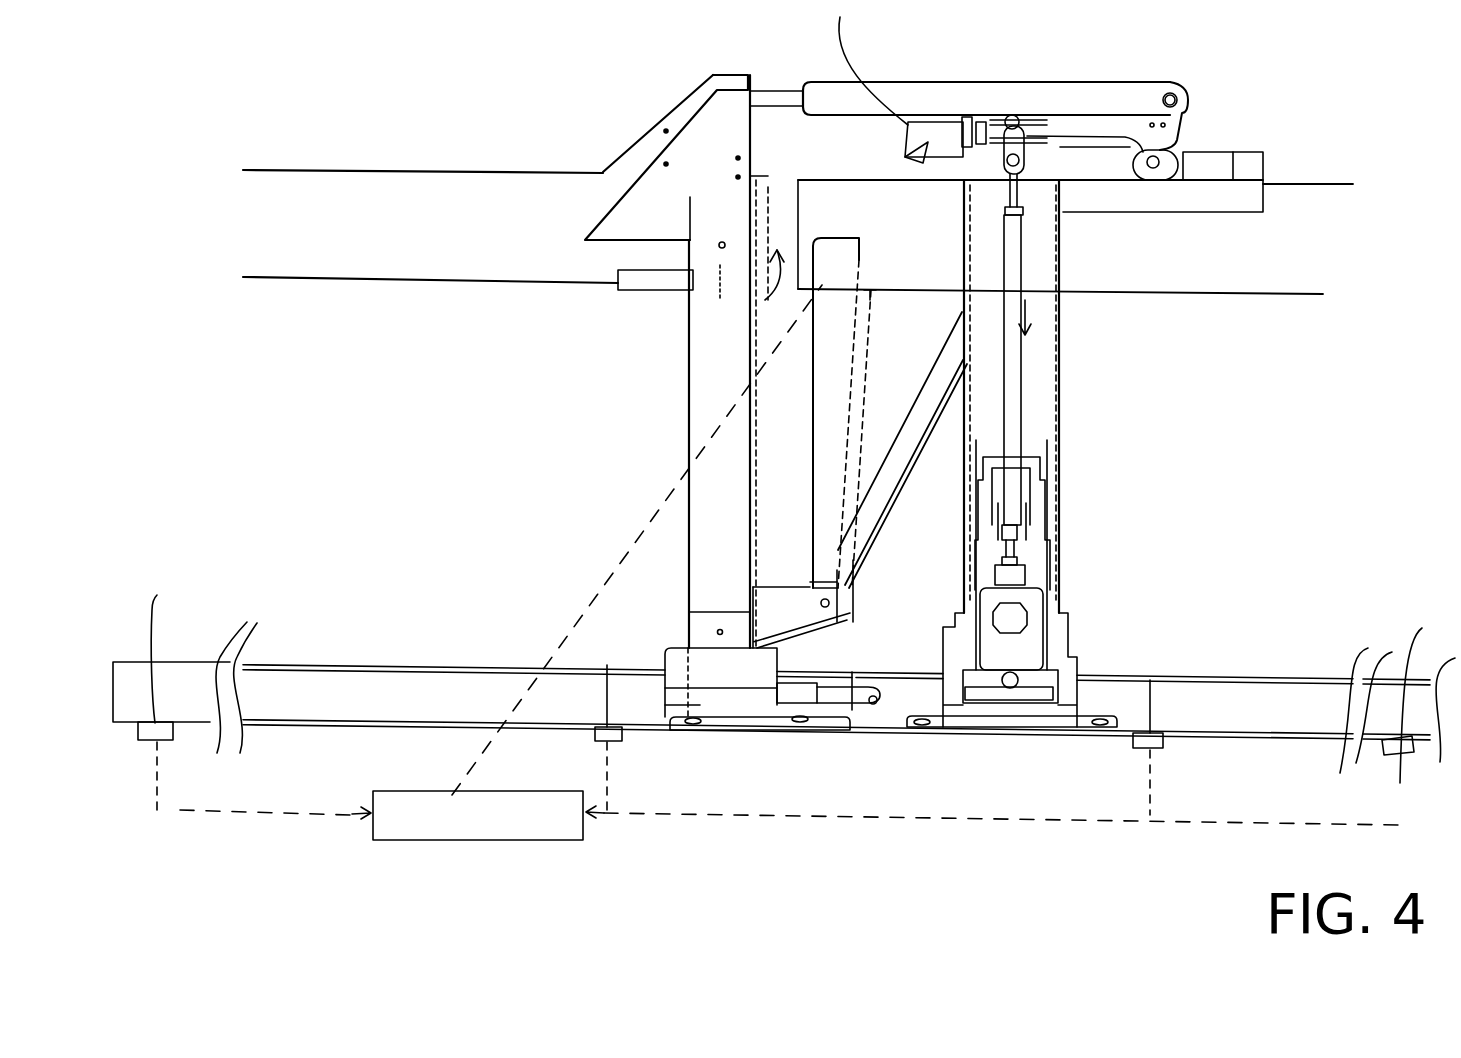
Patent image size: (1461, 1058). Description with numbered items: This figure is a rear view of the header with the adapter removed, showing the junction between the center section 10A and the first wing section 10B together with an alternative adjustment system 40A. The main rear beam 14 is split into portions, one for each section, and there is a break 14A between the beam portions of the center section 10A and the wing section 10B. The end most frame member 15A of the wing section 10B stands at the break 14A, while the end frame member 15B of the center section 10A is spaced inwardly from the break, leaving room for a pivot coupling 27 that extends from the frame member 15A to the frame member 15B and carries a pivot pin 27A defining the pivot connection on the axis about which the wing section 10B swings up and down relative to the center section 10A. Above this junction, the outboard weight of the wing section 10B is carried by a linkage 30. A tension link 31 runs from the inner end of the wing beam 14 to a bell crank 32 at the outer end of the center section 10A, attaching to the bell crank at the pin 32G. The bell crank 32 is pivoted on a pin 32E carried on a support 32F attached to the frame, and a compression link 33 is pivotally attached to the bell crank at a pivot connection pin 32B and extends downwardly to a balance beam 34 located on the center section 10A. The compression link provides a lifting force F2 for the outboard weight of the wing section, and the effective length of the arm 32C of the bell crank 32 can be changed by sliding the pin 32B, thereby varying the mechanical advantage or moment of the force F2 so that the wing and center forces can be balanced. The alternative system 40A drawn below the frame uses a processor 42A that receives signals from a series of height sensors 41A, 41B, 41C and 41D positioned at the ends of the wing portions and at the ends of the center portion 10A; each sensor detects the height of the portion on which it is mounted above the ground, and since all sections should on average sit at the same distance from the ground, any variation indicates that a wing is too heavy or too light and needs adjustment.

The center section 10A is at (1279, 121).
The first wing section 10B is at (551, 153).
The main rear beam 14 is at (590, 160).
The break 14A is at (755, 308).
The end most frame member 15A is at (690, 457).
The end frame member 15B is at (1060, 518).
The pivot coupling 27 is at (862, 668).
The pivot pin 27A is at (870, 704).
The linkage 30 is at (1125, 57).
The tension link 31 is at (928, 98).
The bell crank 32 is at (1182, 155).
The pivot connection pin 32B is at (1007, 138).
The arm 32C is at (985, 125).
The pin 32E is at (1157, 172).
The support 32F is at (1224, 168).
The pin 32G is at (1178, 92).
The compression link 33 is at (1023, 267).
The balance beam 34 is at (1030, 600).
The lifting force F2 is at (1030, 325).
The alternative system 40A is at (668, 842).
The height sensor 41A is at (159, 723).
The height sensor 41B is at (607, 680).
The height sensor 41C is at (1150, 690).
The height sensor 41D is at (1422, 628).
The processor 42A is at (466, 782).